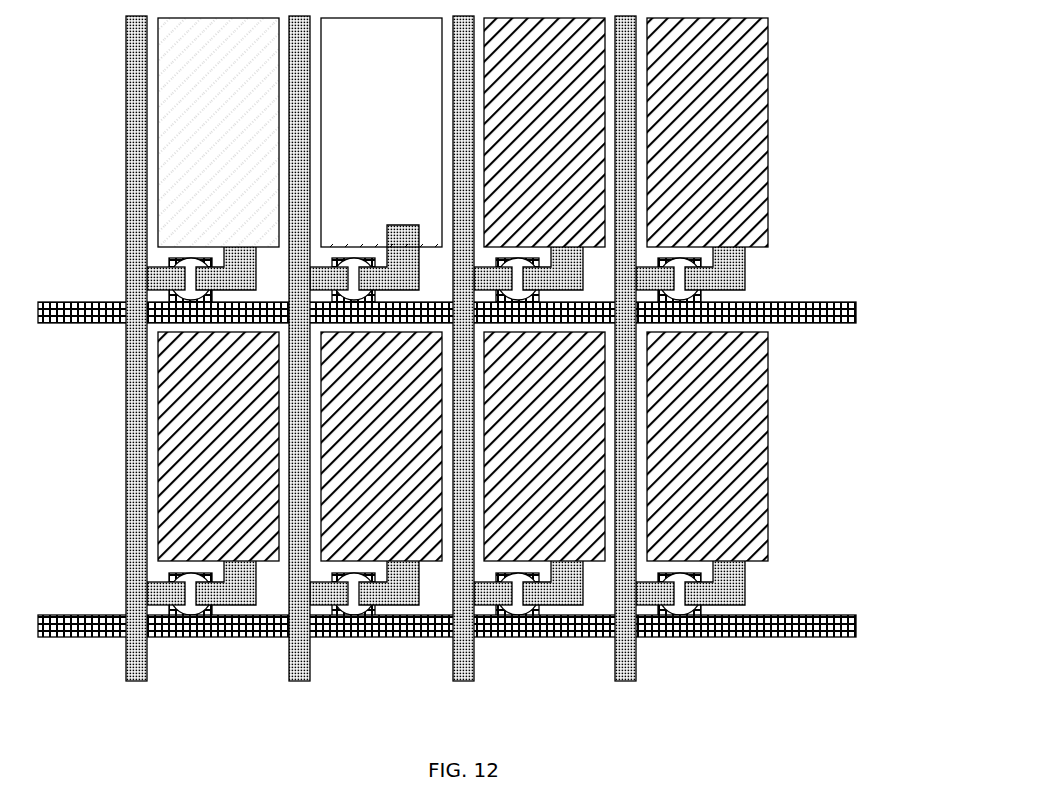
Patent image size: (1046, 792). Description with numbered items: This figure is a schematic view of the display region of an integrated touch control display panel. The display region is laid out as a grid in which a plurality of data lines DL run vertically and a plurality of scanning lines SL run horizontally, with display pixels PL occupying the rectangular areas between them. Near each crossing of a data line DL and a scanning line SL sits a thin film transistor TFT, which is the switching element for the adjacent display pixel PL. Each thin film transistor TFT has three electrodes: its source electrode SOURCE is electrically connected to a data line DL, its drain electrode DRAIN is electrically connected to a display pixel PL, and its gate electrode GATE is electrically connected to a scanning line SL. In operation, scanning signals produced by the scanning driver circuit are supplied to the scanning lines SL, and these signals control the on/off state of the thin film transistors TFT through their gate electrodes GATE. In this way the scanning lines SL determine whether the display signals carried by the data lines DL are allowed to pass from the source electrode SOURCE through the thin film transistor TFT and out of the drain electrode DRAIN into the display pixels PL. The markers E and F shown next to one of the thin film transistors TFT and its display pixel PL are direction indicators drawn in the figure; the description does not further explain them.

The data line DL is at (347, 348).
The scanning line SL is at (467, 451).
The display pixel PL is at (504, 289).
The thin film transistor TFT is at (395, 418).
The gate electrode GATE is at (383, 437).
The source electrode SOURCE is at (359, 436).
The drain electrode DRAIN is at (400, 415).
The direction E is at (641, 267).
The direction F is at (775, 212).